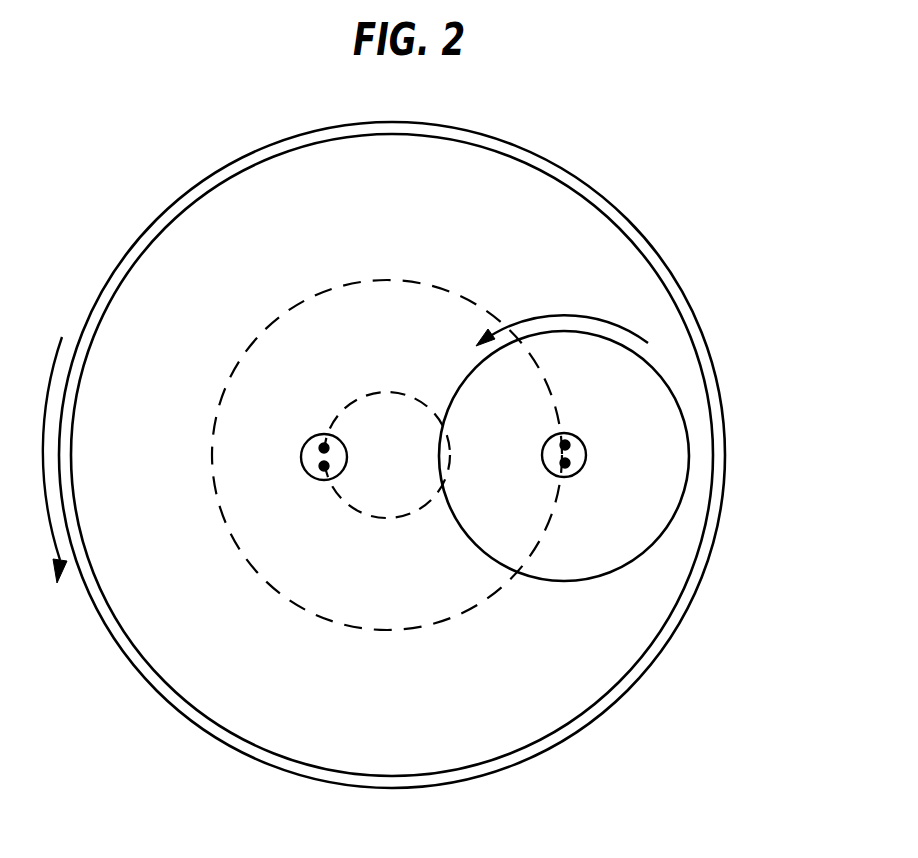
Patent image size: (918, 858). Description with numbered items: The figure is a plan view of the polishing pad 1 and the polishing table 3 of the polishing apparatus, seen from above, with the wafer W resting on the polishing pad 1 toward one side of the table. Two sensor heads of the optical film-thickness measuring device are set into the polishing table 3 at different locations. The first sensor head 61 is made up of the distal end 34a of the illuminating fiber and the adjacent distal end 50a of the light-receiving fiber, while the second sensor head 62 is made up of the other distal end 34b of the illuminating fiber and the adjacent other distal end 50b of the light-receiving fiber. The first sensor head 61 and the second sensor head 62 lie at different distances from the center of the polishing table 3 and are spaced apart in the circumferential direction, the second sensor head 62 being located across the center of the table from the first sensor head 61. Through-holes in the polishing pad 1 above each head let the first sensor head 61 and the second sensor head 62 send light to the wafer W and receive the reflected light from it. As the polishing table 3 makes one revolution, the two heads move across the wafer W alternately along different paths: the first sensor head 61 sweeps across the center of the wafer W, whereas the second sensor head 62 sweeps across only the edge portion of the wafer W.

The polishing pad 1 is at (200, 223).
The polishing table 3 is at (613, 208).
The wafer W is at (677, 395).
The second sensor head 62 is at (295, 462).
The first sensor head 61 is at (589, 448).
The distal end of light-receiving fiber 50a is at (567, 467).
The other distal end of light-receiving fiber 50b is at (322, 446).
The distal end of illuminating fiber 34a is at (567, 443).
The other distal end of illuminating fiber 34b is at (322, 470).